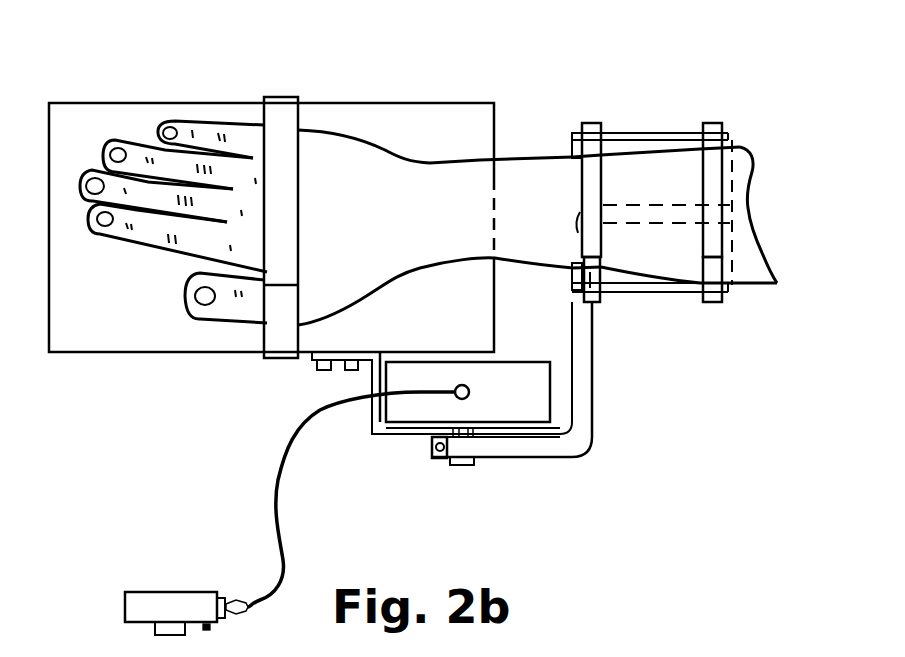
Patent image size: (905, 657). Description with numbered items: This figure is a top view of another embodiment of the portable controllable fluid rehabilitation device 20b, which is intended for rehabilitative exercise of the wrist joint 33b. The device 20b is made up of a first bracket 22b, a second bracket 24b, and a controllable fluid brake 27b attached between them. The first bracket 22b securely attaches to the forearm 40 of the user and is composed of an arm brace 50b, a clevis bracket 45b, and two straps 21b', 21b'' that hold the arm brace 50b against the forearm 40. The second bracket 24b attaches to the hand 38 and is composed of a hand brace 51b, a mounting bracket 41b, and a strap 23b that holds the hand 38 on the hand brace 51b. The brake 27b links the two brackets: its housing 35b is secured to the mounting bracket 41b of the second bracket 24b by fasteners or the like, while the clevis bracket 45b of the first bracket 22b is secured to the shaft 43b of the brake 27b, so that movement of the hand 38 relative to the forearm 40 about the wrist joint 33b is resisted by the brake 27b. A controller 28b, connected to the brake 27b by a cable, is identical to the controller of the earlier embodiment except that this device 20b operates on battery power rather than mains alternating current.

The portable controllable fluid rehabilitation device 20b is at (470, 78).
The strap 21b' is at (559, 178).
The strap 21b'' is at (777, 207).
The first bracket 22b is at (740, 302).
The strap 23b is at (280, 103).
The second bracket 24b is at (212, 361).
The controllable fluid brake 27b is at (542, 432).
The controller 28b is at (118, 575).
The wrist joint 33b is at (470, 222).
The housing 35b is at (528, 406).
The hand 38 is at (342, 234).
The forearm 40 is at (666, 196).
The mounting bracket 41b is at (375, 432).
The shaft 43b is at (470, 463).
The clevis bracket 45b is at (592, 352).
The arm brace 50b is at (637, 130).
The hand brace 51b is at (127, 327).